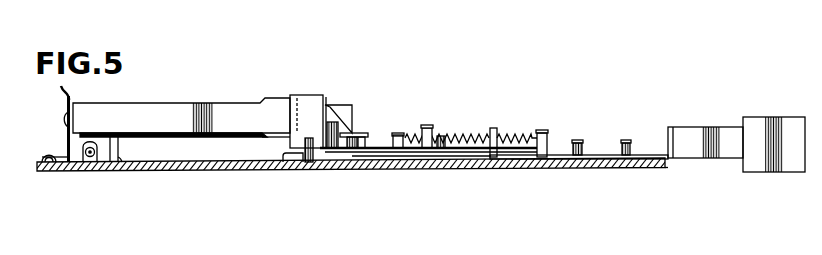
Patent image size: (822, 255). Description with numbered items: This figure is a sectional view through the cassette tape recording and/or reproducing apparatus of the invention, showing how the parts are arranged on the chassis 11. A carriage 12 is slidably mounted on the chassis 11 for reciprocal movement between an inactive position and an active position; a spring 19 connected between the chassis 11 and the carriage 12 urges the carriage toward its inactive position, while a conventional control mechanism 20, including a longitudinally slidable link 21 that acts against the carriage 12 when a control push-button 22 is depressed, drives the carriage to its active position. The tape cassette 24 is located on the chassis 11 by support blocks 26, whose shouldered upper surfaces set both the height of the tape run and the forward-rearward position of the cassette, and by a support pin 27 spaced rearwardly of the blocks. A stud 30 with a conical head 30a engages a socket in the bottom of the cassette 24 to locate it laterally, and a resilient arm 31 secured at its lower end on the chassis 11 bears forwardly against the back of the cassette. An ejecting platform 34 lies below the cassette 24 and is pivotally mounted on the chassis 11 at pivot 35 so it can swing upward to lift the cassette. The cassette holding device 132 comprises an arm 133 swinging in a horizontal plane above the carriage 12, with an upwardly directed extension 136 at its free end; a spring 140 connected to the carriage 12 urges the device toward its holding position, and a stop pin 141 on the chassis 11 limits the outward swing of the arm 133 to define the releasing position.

The chassis 11 is at (165, 171).
The carriage 12 is at (447, 149).
The spring 19 is at (505, 133).
The control mechanism 20 is at (703, 162).
The link 21 is at (592, 152).
The control push-button 22 is at (765, 122).
The tape cassette 24 is at (167, 103).
The support blocks 26 is at (351, 108).
The support pin 27 is at (121, 158).
The stud 30 is at (284, 160).
The conical head 30a is at (294, 104).
The resilient arm 31 is at (67, 127).
The platform 34 is at (213, 137).
The pivot 35 is at (90, 157).
The cassette holding device 132 is at (370, 138).
The arm 133 is at (346, 157).
The extension 136 is at (318, 104).
The spring 140 is at (405, 134).
The stop pin 141 is at (310, 162).